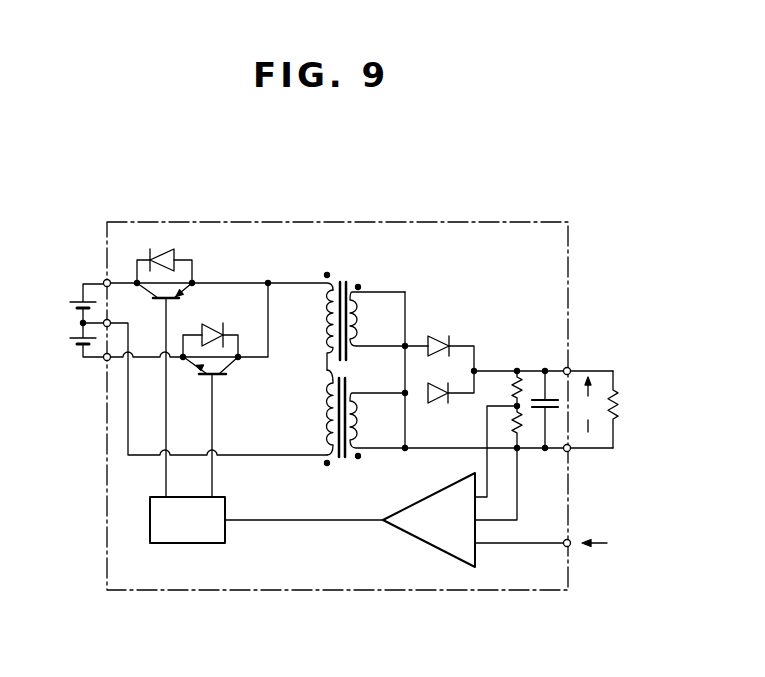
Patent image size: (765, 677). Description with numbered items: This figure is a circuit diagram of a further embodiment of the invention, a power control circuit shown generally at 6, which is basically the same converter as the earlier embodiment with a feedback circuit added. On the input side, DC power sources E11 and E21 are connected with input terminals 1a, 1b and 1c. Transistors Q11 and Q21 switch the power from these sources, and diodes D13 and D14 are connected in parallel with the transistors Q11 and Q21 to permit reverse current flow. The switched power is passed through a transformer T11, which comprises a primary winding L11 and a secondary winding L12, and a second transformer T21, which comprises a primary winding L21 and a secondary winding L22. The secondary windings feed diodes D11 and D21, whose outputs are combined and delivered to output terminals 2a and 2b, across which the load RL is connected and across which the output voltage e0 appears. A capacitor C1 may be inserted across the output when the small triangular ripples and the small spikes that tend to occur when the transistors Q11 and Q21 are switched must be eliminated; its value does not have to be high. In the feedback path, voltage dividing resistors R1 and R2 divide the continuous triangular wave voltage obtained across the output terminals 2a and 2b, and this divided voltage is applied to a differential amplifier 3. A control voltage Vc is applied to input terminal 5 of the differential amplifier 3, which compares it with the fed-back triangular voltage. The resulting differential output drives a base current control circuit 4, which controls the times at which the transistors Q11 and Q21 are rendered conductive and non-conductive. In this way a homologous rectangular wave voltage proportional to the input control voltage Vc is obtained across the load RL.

The input terminal 1a is at (107, 280).
The input terminal 1b is at (110, 321).
The input terminal 1c is at (105, 360).
The output terminal 2a is at (569, 368).
The output terminal 2b is at (569, 451).
The differential amplifier 3 is at (429, 520).
The base current control circuit 4 is at (187, 520).
The input terminal of the differential amplifier 5 is at (569, 540).
The power control circuit 6 is at (513, 590).
The DC power source E21 is at (72, 303).
The DC power source E11 is at (72, 339).
The diode D14 is at (173, 259).
The diode D13 is at (213, 320).
The transistor Q21 is at (173, 390).
The transistor Q11 is at (221, 427).
The second transformer T21 is at (358, 308).
The transformer T11 is at (450, 435).
The primary winding L21 is at (311, 330).
The secondary winding L22 is at (389, 319).
The primary winding L11 is at (310, 412).
The secondary winding L12 is at (481, 420).
The diode D21 is at (451, 340).
The diode D11 is at (451, 405).
The voltage dividing resistor R1 is at (505, 388).
The voltage dividing resistor R2 is at (504, 427).
The capacitor C1 is at (549, 409).
The load RL is at (624, 409).
The output voltage e0 is at (586, 404).
The control voltage Vc is at (595, 562).